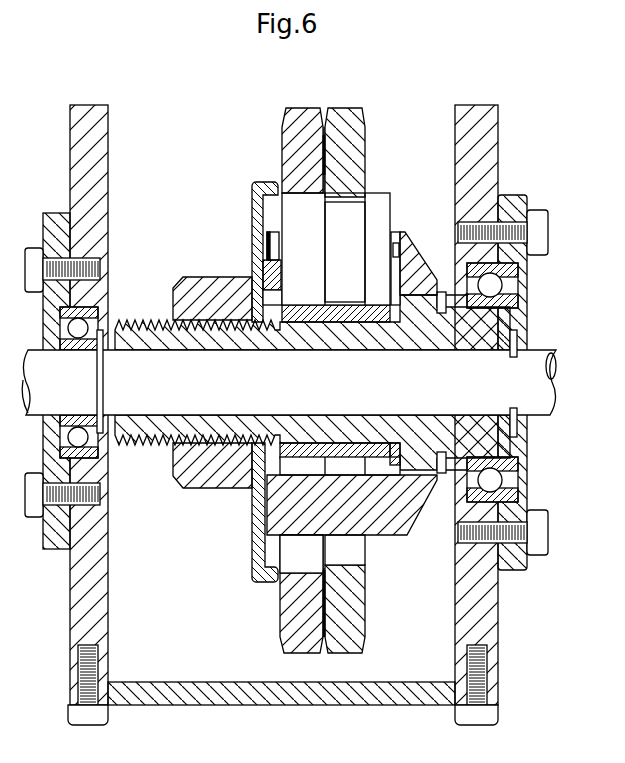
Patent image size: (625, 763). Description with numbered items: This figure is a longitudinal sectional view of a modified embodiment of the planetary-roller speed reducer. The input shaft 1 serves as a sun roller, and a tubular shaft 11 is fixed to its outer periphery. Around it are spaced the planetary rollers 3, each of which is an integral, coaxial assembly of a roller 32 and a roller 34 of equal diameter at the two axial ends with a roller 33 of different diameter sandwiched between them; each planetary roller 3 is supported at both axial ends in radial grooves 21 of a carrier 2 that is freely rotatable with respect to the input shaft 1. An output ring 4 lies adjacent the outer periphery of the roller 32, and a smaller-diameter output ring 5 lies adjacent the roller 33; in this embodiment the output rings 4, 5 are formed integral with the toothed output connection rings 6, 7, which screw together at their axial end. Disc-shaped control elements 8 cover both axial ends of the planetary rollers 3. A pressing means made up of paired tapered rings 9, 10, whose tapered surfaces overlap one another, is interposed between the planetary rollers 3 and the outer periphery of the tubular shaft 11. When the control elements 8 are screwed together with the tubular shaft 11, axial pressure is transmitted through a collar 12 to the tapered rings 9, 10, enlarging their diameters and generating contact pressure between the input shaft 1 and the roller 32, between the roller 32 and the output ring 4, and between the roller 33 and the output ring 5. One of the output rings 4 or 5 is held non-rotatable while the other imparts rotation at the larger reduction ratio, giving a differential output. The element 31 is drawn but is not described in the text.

The input shaft 1 is at (488, 372).
The carrier 2 is at (397, 523).
The planetary roller 3 is at (298, 230).
The output ring 4 is at (301, 350).
The output ring 5 is at (365, 175).
The output connection ring 6 is at (302, 120).
The output connection ring 7 is at (355, 122).
The control element 8 is at (192, 297).
The tapered ring 9 is at (250, 484).
The tapered ring 10 is at (268, 487).
The tubular shaft 11 is at (493, 330).
The collar 12 is at (260, 280).
The radial groove 21 is at (403, 258).
The pressure strip 31 is at (398, 258).
The roller 32 is at (290, 245).
The roller 33 is at (347, 215).
The roller 34 is at (378, 217).